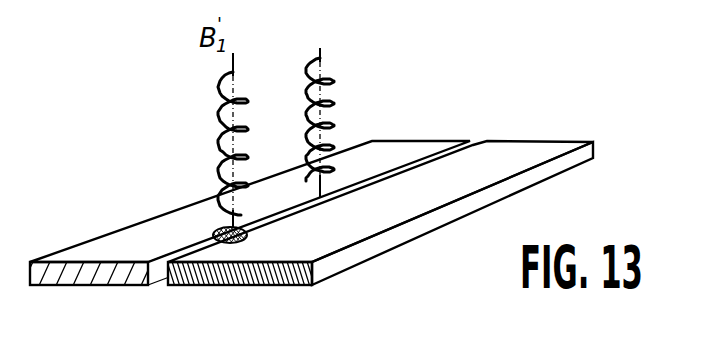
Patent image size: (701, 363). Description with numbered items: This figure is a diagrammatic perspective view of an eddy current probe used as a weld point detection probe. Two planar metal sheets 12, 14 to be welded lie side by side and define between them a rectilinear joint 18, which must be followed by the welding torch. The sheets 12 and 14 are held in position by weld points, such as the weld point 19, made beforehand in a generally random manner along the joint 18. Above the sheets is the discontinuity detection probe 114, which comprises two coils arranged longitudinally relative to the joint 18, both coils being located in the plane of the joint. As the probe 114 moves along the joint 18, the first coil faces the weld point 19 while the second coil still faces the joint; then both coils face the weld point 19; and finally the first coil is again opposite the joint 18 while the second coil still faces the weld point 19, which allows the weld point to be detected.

The metal sheet 12 is at (73, 270).
The metal sheet 14 is at (282, 276).
The joint 18 is at (167, 284).
The weld point 19 is at (218, 233).
The discontinuity detection probe 114 is at (332, 93).